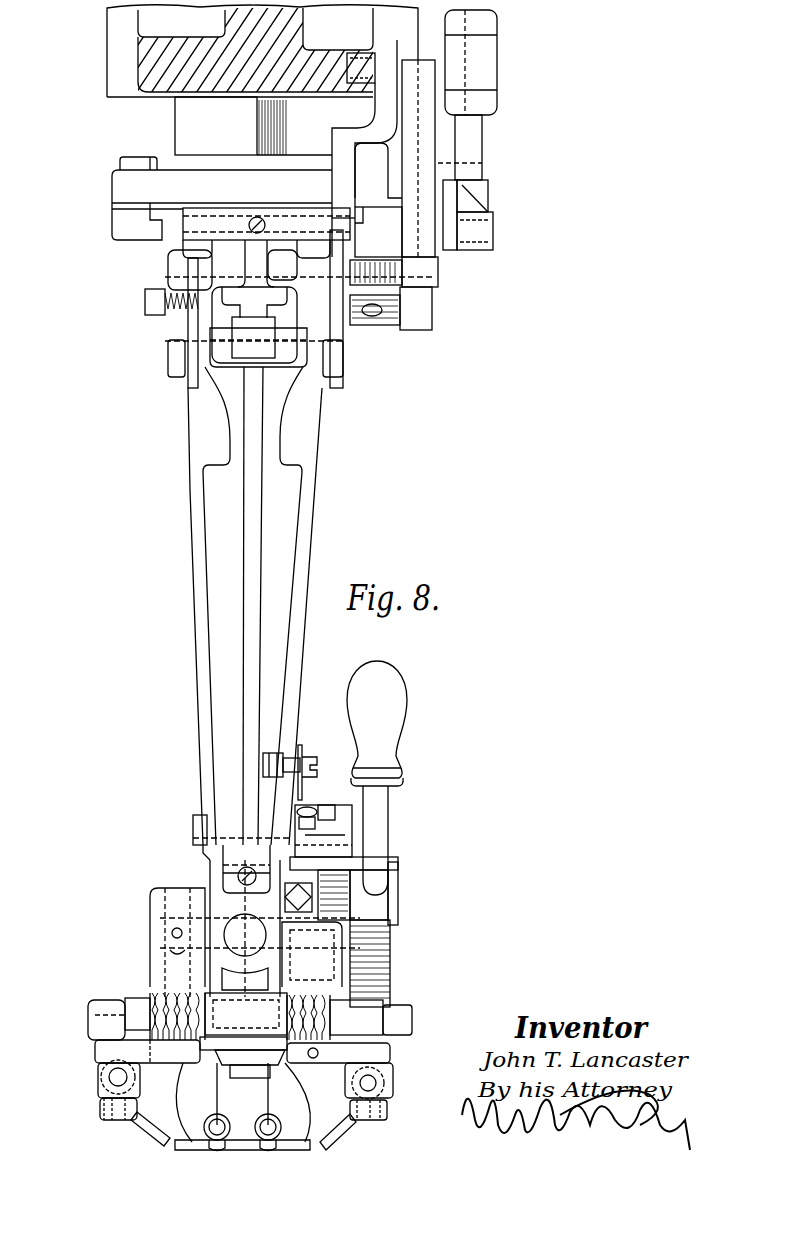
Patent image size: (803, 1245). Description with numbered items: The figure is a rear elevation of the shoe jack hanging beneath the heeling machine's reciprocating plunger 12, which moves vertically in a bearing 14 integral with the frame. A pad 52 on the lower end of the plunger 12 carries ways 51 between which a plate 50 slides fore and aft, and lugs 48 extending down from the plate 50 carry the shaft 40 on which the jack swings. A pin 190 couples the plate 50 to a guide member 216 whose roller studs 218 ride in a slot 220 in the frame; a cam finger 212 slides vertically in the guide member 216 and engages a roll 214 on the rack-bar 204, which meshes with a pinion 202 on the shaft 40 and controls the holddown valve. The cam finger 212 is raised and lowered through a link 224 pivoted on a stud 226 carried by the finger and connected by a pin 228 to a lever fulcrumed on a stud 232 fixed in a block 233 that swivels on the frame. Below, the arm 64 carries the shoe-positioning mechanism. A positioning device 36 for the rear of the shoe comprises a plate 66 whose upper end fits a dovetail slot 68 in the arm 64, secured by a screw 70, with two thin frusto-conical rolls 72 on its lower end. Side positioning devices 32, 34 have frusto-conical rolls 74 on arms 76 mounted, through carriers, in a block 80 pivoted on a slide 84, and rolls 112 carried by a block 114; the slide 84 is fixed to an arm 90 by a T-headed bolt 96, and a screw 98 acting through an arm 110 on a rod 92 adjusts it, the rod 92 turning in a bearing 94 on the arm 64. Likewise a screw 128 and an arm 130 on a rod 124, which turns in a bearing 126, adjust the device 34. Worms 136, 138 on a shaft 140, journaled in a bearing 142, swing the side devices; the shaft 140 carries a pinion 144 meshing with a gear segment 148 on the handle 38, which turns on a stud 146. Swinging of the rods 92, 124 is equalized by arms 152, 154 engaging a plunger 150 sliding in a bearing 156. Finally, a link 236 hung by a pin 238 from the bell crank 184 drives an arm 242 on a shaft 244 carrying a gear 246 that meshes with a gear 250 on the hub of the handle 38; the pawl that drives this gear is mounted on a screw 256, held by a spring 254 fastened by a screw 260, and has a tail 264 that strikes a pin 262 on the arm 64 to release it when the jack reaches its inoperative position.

The bearing 14 is at (115, 47).
The reciprocating plunger 12 is at (178, 112).
The slot 220 is at (355, 62).
The roller studs 218 is at (362, 62).
The guide member 216 is at (358, 130).
The block 233 is at (490, 62).
The stud 232 is at (475, 137).
The stud 226 is at (482, 163).
The link 224 is at (448, 188).
The pin 228 is at (493, 232).
The pad 52 is at (120, 178).
The ways 51 is at (120, 205).
The plate 50 is at (150, 213).
The pin 190 is at (182, 228).
The bell crank 184 is at (212, 313).
The lugs 48 is at (166, 343).
The shaft 40 is at (225, 282).
The pin 238 is at (208, 345).
The roll 214 is at (420, 273).
The rack-bar 204 is at (385, 283).
The cam finger 212 is at (425, 310).
The pinion 202 is at (375, 320).
The arm 64 is at (312, 490).
The link 236 is at (247, 523).
The arm 242 is at (228, 838).
The shaft 244 is at (193, 833).
The pin 262 is at (300, 756).
The spring 254 is at (326, 805).
The screw 260 is at (307, 808).
The screw 256 is at (350, 830).
The tail 264 is at (345, 848).
The gear 246 is at (398, 862).
The gear 250 is at (350, 893).
The stud 146 is at (400, 903).
The gear segment 148 is at (390, 945).
The arm 154 is at (330, 938).
The bearing 126 is at (330, 962).
The rod 124 is at (330, 975).
The handle 38 is at (388, 728).
The plunger 150 is at (243, 920).
The arm 90 is at (150, 918).
The rod 92 is at (172, 886).
The arm 152 is at (160, 930).
The bearing 94 is at (160, 958).
The worm 136 is at (170, 985).
The bearing 156 is at (243, 1009).
The T-headed bolt 96 is at (125, 1000).
The slide 84 is at (108, 1020).
The pinion 144 is at (375, 1010).
The shaft 140 is at (400, 1036).
The arm 110 is at (135, 1052).
The arm 130 is at (370, 1055).
The block 80 is at (100, 1078).
The screw 98 is at (112, 1080).
The arms 76 is at (137, 1128).
The frusto-conical rolls 74 is at (165, 1140).
The positioning device 32 is at (100, 1125).
The block 114 is at (393, 1082).
The screw 128 is at (378, 1092).
The frusto-conical rolls 112 is at (318, 1135).
The positioning device 34 is at (345, 1140).
The screw 70 is at (243, 1102).
The plate 66 is at (245, 1128).
The frusto-conical rolls 72 is at (212, 1119).
The positioning device 36 is at (262, 1155).
The bearing 142 is at (215, 1047).
The dovetail slot 68 is at (283, 1072).
The worm 138 is at (330, 1075).